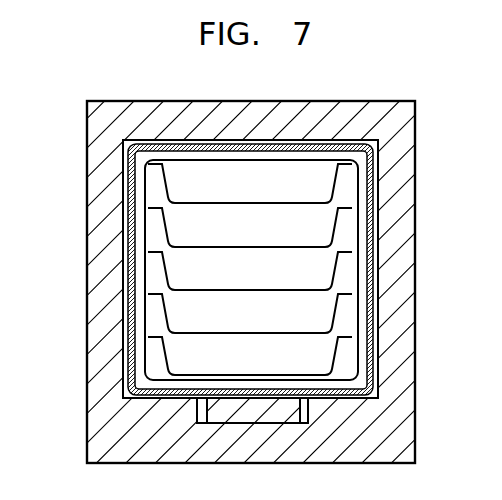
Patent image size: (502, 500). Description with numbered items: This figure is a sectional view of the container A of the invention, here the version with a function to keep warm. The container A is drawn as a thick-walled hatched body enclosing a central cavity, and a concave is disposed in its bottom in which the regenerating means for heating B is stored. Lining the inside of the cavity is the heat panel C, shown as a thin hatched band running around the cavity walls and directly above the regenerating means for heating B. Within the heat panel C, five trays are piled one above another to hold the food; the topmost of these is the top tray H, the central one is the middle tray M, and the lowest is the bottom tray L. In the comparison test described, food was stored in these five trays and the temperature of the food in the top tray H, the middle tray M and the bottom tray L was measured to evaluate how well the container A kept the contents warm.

The container A is at (405, 300).
The regenerating means for heating B is at (320, 413).
The heat panel C is at (373, 233).
The top tray H is at (165, 197).
The middle tray M is at (165, 272).
The bottom tray L is at (165, 360).